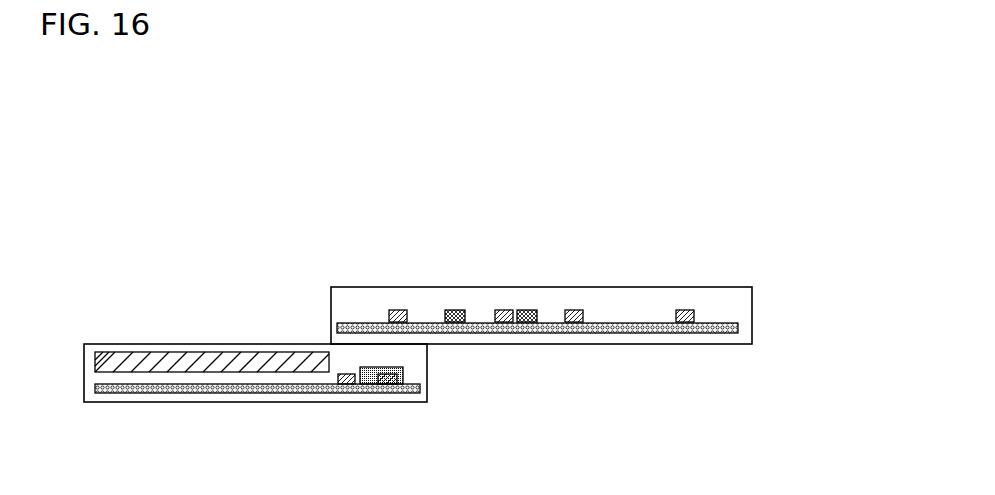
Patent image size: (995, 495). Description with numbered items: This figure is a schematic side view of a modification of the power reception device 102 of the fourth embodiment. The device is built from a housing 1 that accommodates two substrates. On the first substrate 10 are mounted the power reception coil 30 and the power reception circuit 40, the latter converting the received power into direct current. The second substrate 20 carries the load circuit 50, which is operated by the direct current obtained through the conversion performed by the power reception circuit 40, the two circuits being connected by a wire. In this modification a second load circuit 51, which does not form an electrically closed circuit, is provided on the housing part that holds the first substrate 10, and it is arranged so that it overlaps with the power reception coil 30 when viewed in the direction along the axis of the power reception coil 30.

The power reception device 102 is at (586, 240).
The housing 1 is at (652, 287).
The second substrate 20 is at (721, 322).
The load circuit 50 is at (398, 310).
The first substrate 10 is at (172, 402).
The second load circuit 51 is at (228, 352).
The power reception coil 30 is at (253, 373).
The power reception circuit 40 is at (403, 374).